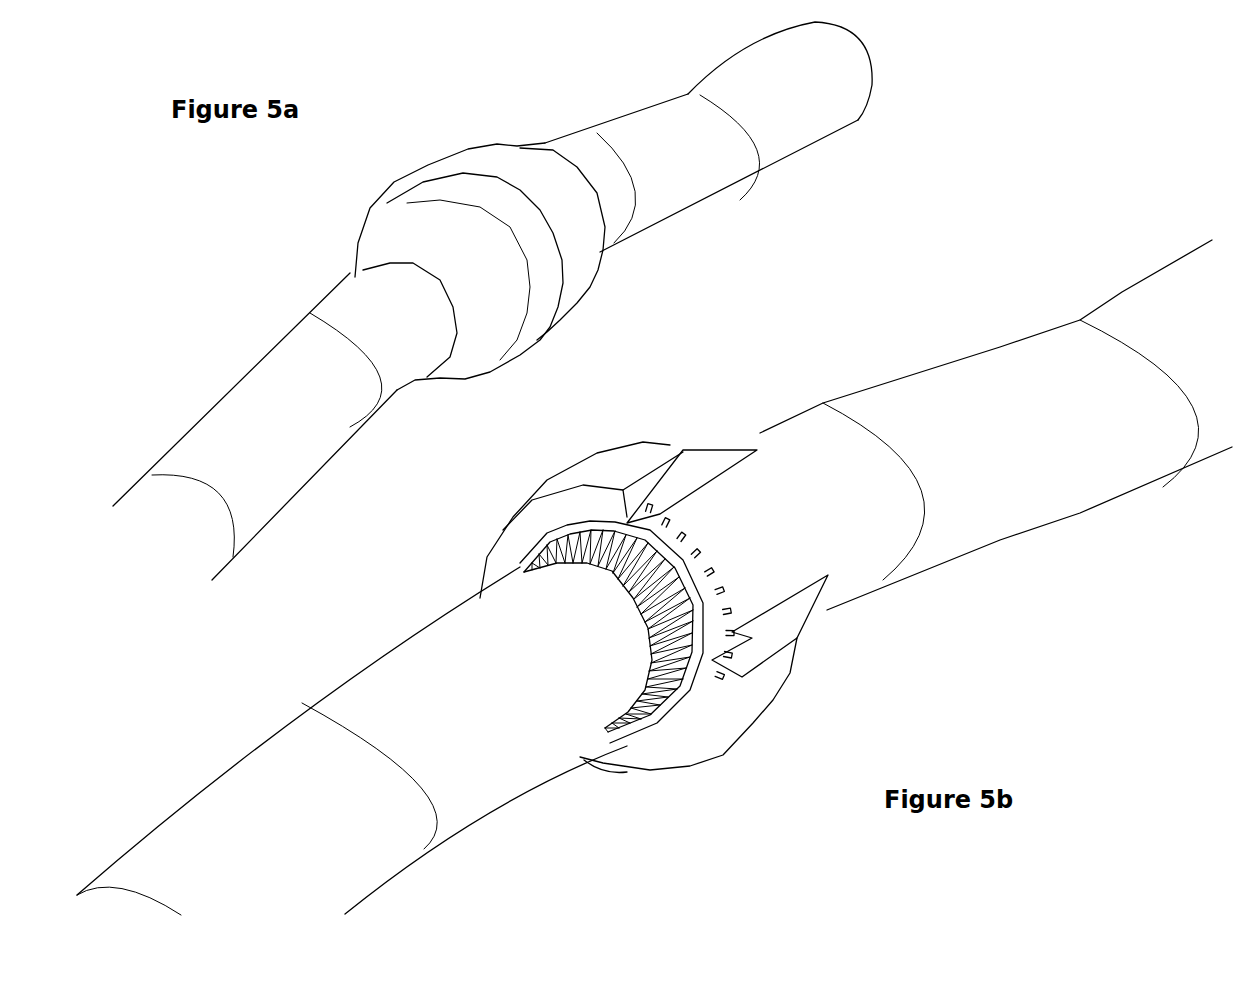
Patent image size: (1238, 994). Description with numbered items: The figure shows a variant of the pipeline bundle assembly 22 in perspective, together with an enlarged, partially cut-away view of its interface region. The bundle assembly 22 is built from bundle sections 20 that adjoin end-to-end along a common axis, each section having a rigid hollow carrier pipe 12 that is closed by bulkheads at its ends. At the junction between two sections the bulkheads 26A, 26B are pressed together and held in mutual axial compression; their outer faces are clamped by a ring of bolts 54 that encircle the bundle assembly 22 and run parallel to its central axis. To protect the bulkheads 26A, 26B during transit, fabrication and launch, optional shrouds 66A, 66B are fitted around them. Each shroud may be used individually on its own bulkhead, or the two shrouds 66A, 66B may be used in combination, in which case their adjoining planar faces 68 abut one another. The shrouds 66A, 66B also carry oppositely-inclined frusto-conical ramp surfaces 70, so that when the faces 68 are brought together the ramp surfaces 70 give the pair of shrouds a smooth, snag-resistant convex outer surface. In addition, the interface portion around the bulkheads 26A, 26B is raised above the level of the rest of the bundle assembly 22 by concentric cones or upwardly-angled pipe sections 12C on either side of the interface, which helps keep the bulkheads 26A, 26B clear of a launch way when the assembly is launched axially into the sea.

In FIG. 5A, the carrier pipe 12 is at (362, 312).
In FIG. 5B, the carrier pipe 12 is at (523, 747).
In FIG. 5A, the upwardly-angled pipe sections 12C is at (322, 413).
In FIG. 5B, the upwardly-angled pipe sections 12C is at (222, 820).
In FIG. 5A, the bundle section 20 is at (309, 524).
In FIG. 5B, the bundle section 20 is at (488, 870).
In FIG. 5B, the pipeline bundle assembly 22 is at (787, 381).
In FIG. 5B, the bulkhead 26A is at (683, 577).
In FIG. 5B, the bulkhead 26B is at (685, 678).
In FIG. 5B, the bolts 54 is at (640, 603).
In FIG. 5A, the shroud 66A is at (572, 263).
In FIG. 5B, the shroud 66A is at (765, 678).
In FIG. 5A, the shroud 66B is at (477, 337).
In FIG. 5B, the planar faces 68 is at (570, 508).
In FIG. 5B, the frusto-conical ramp surfaces 70 is at (703, 448).